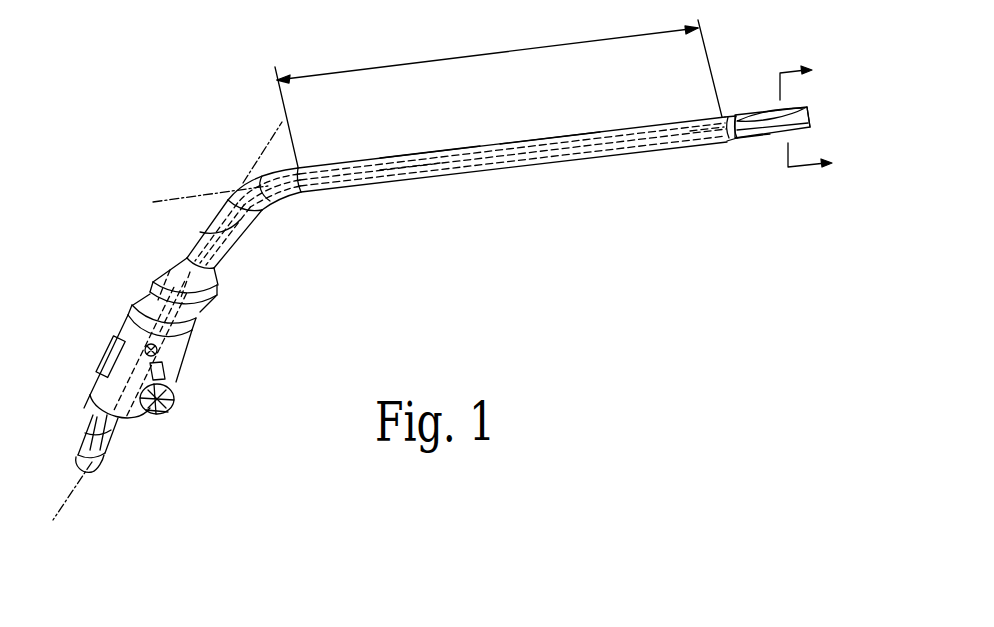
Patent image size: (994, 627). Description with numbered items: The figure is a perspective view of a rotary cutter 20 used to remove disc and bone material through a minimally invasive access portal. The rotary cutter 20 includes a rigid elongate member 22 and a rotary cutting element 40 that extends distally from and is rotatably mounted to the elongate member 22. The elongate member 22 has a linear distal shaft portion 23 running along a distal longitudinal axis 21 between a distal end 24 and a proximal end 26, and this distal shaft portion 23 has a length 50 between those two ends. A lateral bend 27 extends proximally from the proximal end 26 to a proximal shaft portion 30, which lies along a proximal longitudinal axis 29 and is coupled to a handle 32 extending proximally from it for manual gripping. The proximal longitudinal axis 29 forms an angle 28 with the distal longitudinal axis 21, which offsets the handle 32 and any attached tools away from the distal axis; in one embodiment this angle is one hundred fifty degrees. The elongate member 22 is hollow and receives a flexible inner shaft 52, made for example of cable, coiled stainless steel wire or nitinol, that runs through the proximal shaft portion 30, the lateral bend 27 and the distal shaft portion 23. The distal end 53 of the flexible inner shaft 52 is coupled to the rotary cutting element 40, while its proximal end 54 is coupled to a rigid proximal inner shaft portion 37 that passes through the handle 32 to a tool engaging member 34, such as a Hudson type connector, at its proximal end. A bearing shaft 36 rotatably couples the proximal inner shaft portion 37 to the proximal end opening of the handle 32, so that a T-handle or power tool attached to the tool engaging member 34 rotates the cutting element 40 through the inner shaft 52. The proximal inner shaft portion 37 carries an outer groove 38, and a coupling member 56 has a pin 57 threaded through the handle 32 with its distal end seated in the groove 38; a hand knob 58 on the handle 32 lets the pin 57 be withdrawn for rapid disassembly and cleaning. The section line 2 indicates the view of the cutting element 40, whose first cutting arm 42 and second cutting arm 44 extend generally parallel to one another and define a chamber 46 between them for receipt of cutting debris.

The section line 2- 2 is at (807, 116).
The rotary cutter 20 is at (542, 228).
The distal longitudinal axis 21 is at (538, 158).
The rigid elongate member 22 is at (430, 140).
The distal shaft portion 23 is at (540, 130).
The distal end 24 is at (720, 117).
The proximal end 26 is at (298, 168).
The lateral bend 27 is at (243, 180).
The angle 28 is at (260, 218).
The proximal longitudinal axis 29 is at (212, 299).
The proximal shaft portion 30 is at (173, 243).
The handle 32 is at (167, 362).
The tool engaging member 34 is at (93, 477).
The bearing shaft 36 is at (110, 440).
The proximal inner shaft portion 37 is at (83, 437).
The outer groove 38 is at (110, 340).
The rotary cutting element 40 is at (775, 150).
The first cutting arm 42 is at (753, 117).
The second cutting arm 44 is at (798, 130).
The chamber 46 is at (738, 143).
The length 50 is at (498, 93).
The flexible inner shaft 52 is at (413, 188).
The distal end 53 is at (716, 148).
The proximal end 54 is at (127, 317).
The coupling member 56 is at (170, 428).
The pin 57 is at (173, 392).
The hand knob 58 is at (172, 408).